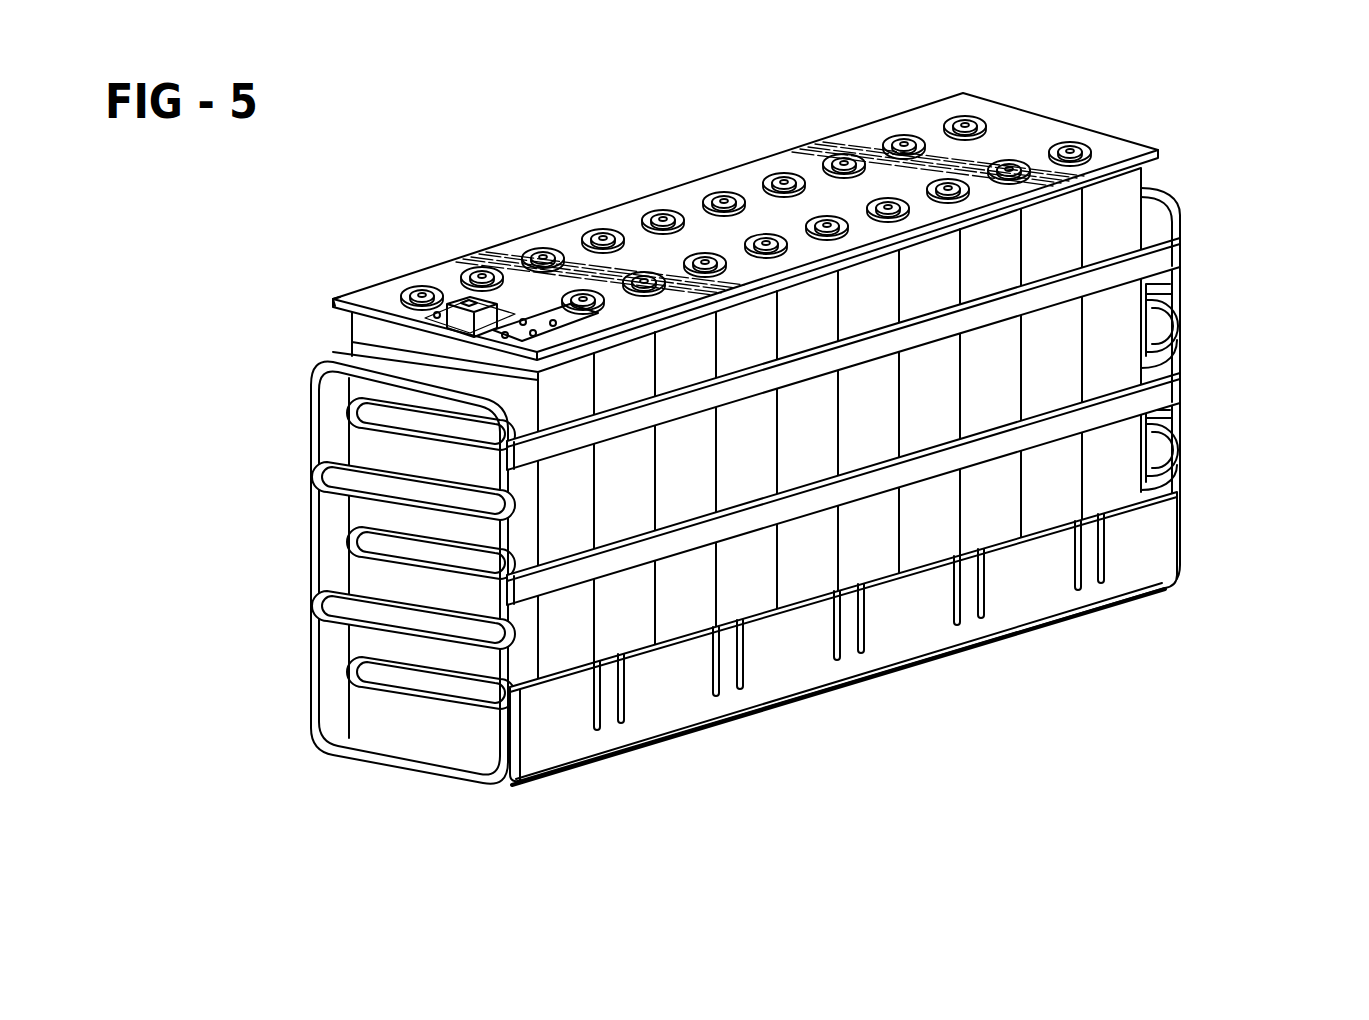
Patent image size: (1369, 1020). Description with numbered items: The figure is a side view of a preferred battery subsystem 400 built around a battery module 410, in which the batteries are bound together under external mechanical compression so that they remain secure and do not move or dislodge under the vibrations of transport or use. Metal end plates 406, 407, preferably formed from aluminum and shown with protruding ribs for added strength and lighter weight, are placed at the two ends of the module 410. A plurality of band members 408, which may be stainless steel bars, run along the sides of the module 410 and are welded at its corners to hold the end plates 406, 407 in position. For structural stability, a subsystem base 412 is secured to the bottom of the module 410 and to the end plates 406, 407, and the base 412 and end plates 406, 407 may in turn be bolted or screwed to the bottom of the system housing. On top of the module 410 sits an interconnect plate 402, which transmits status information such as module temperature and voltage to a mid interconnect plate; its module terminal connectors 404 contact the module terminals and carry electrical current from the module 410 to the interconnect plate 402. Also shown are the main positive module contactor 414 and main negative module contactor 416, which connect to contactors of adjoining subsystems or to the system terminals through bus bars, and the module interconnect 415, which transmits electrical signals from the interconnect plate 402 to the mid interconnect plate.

The subsystem 400 is at (392, 230).
The interconnect plate 402 is at (1020, 140).
The module terminal connectors 404 is at (1070, 145).
The end plate 406 is at (412, 620).
The end plate 407 is at (1168, 300).
The band members 408 is at (612, 560).
The battery module 410 is at (803, 583).
The subsystem base 412 is at (1034, 590).
The main positive module contactor 414 is at (555, 325).
The module interconnect 415 is at (480, 312).
The main negative module contactor 416 is at (333, 299).